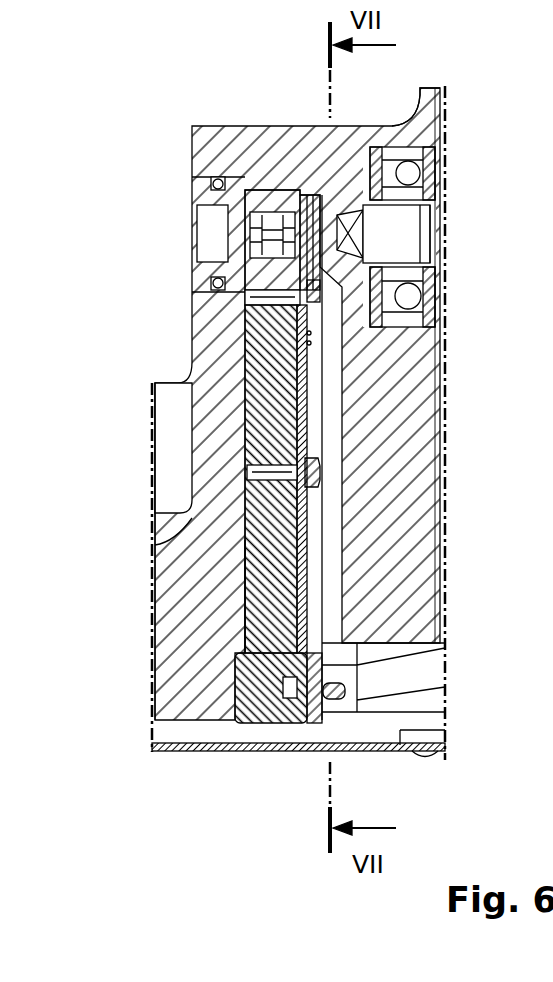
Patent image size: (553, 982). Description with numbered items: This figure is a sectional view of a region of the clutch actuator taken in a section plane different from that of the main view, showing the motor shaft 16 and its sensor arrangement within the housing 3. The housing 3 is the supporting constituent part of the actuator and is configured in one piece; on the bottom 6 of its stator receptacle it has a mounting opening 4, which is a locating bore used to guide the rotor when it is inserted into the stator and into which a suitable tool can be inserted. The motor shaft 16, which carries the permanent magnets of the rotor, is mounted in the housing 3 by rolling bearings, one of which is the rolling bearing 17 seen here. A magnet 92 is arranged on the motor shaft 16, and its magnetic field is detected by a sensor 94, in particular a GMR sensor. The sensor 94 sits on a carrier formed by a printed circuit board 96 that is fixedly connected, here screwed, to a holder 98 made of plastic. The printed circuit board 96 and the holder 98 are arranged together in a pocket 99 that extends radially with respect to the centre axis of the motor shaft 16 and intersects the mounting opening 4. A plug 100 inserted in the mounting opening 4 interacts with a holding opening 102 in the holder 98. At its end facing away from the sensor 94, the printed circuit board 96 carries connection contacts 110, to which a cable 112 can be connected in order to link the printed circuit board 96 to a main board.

The housing 3 is at (207, 130).
The mounting opening 4 is at (248, 184).
The bottom 6 is at (442, 98).
The motor shaft 16 is at (410, 243).
The rolling bearing 17 is at (410, 295).
The magnet 92 is at (350, 232).
The sensor 94 is at (308, 212).
The printed circuit board 96 is at (300, 532).
The holder 98 is at (260, 555).
The pocket 99 is at (247, 580).
The plug 100 is at (245, 232).
The holding opening 102 is at (262, 215).
The connection contacts 110 is at (338, 690).
The cable 112 is at (430, 668).